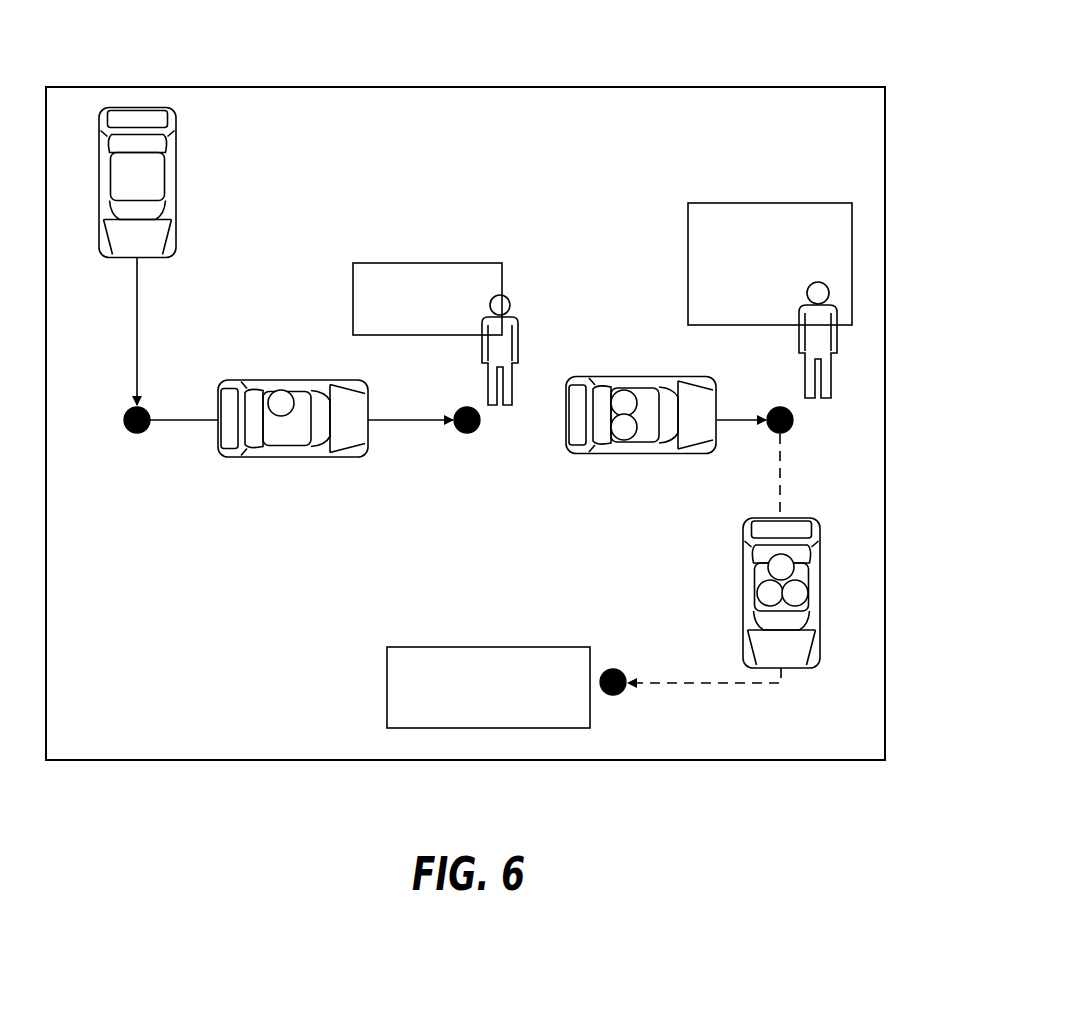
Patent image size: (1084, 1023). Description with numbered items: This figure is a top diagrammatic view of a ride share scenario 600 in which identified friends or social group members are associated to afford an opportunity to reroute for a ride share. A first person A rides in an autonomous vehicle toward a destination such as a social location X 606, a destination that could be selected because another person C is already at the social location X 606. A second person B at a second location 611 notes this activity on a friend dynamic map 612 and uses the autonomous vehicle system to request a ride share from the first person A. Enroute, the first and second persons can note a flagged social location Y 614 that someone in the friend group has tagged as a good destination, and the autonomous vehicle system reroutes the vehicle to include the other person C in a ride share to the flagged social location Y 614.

The ride share scenario 600 is at (315, 118).
The social location X 606 is at (770, 264).
The second location 611 is at (427, 299).
The friend dynamic map 612 is at (465, 423).
The flagged social location Y 614 is at (488, 687).